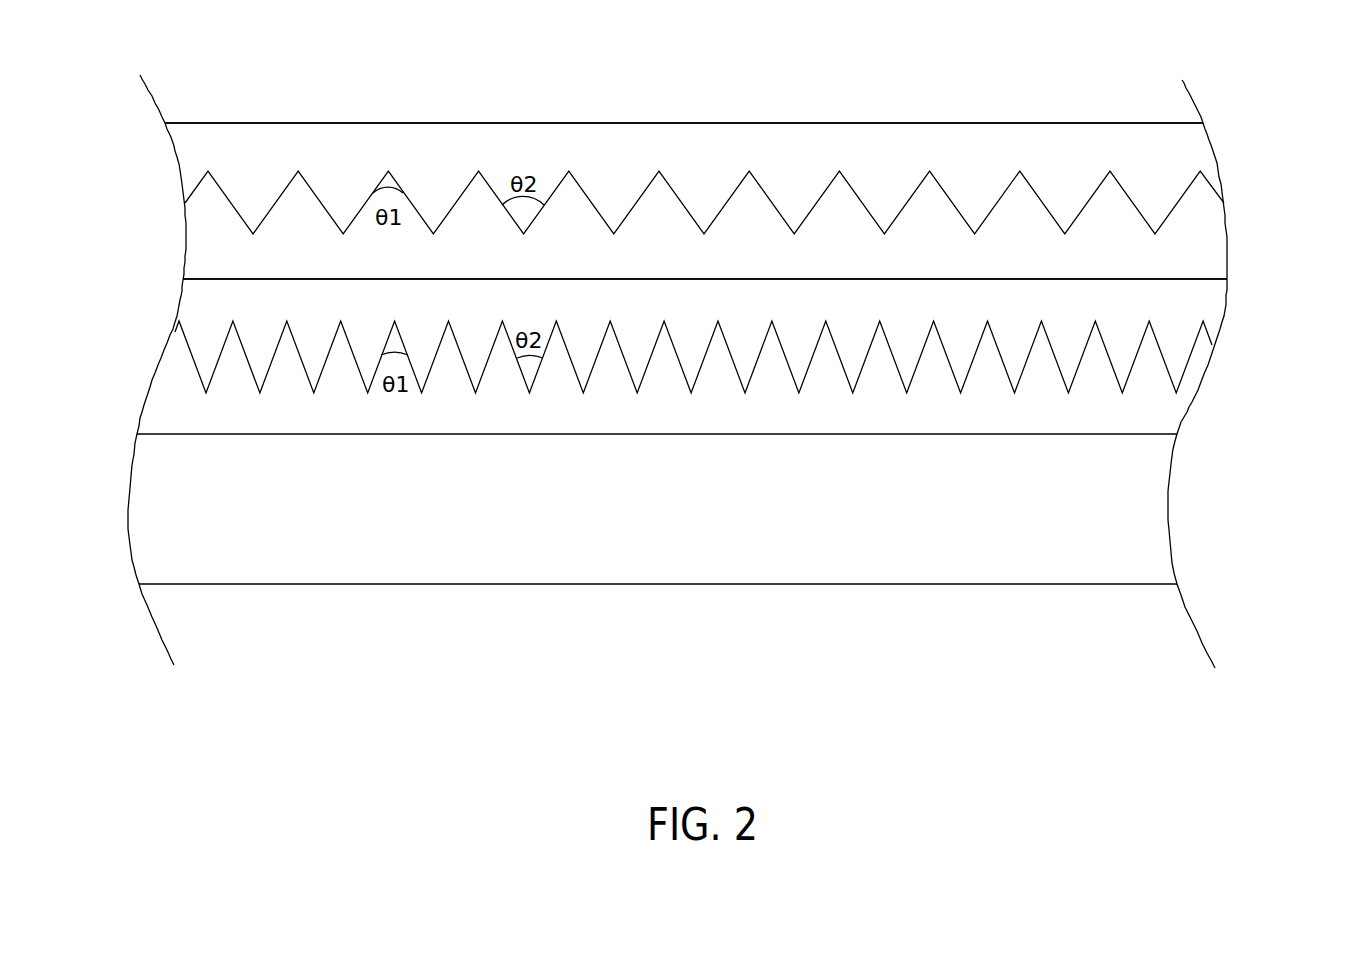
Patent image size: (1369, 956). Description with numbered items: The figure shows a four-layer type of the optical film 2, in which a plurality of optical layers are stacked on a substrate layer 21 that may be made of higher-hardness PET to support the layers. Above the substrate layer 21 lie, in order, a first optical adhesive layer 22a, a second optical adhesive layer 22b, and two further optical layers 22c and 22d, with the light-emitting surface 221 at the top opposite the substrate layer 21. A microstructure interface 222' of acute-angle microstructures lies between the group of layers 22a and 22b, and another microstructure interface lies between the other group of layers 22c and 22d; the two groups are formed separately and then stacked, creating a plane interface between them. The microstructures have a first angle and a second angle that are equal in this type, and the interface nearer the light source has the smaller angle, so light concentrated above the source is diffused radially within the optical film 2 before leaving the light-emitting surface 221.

The optical film 2 is at (132, 150).
The substrate layer 21 is at (1157, 512).
The first optical adhesive layer 22a is at (1175, 408).
The second optical adhesive layer 22b is at (1210, 305).
The optical layer 22c is at (1218, 257).
The optical layer 22d is at (1203, 160).
The light-emitting surface 221 is at (788, 116).
The microstructure interface 222' is at (693, 398).